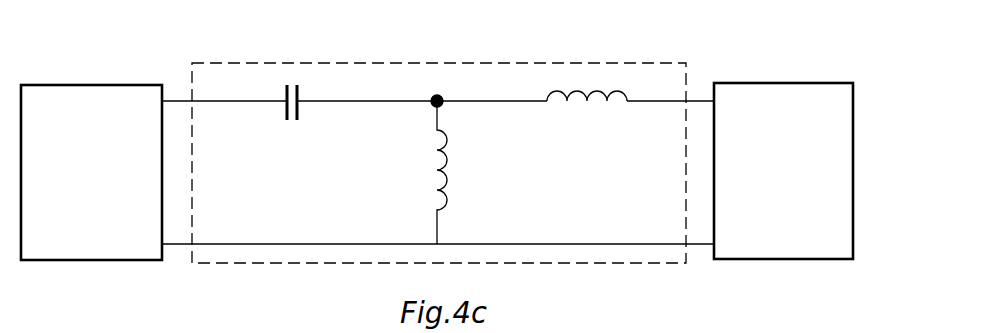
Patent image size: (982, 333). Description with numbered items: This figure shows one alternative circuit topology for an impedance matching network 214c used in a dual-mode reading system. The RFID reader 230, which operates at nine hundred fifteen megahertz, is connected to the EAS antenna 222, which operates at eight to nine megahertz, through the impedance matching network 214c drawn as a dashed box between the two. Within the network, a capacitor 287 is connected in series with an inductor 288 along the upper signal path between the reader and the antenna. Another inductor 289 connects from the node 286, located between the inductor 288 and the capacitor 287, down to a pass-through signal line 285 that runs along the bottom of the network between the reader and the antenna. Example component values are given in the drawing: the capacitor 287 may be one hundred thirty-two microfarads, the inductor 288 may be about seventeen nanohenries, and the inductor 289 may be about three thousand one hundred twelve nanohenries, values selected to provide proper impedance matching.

The RFID reader 230 is at (115, 85).
The EAS antenna 222 is at (730, 83).
The impedance matching network 214c is at (330, 63).
The capacitor 287 is at (293, 83).
The node 286 is at (436, 95).
The inductor 288 is at (576, 90).
The inductor 289 is at (437, 172).
The pass-through signal line 285 is at (279, 243).